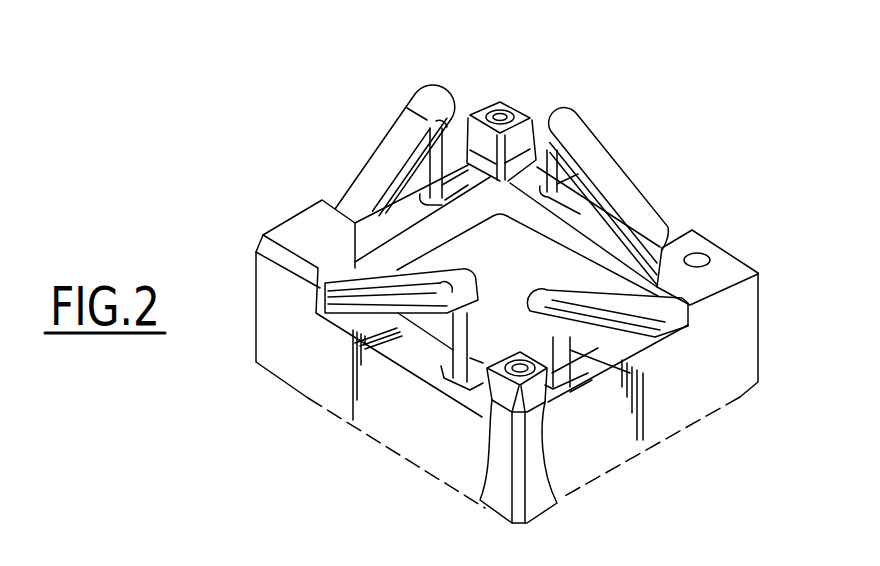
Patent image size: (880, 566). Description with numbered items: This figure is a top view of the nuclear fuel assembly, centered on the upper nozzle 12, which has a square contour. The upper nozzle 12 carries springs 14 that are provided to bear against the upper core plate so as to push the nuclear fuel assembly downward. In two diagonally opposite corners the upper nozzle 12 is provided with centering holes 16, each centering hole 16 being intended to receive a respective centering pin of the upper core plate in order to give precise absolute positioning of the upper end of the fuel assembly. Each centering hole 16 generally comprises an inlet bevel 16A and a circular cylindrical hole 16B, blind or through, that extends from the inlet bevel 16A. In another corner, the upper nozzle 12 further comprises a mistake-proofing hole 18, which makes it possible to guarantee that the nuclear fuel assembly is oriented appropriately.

The upper nozzle 12 is at (392, 413).
The springs 14 is at (373, 173).
The centering hole 16 is at (510, 100).
The inlet bevel 16A is at (497, 111).
The circular cylindrical hole 16B is at (497, 103).
The mistake-proofing hole 18 is at (697, 258).